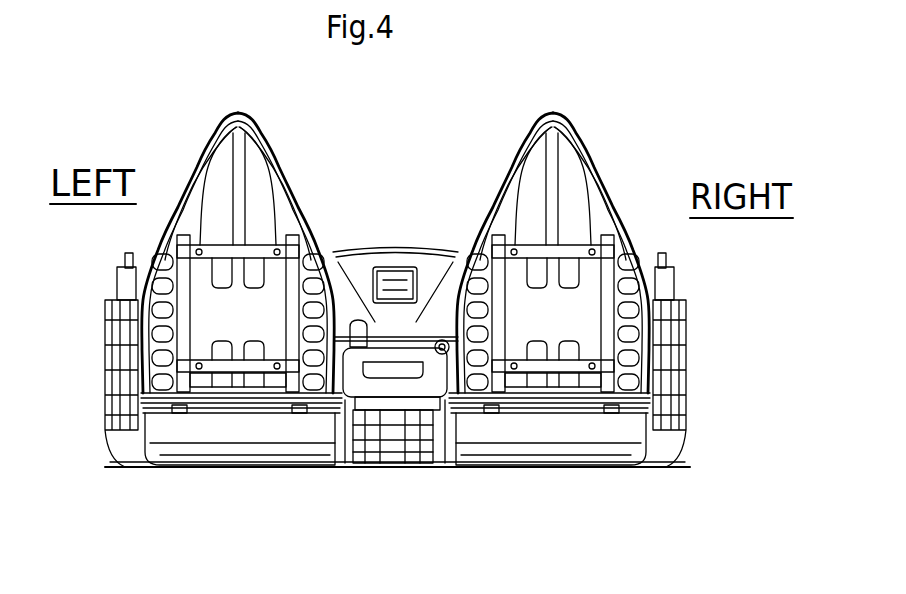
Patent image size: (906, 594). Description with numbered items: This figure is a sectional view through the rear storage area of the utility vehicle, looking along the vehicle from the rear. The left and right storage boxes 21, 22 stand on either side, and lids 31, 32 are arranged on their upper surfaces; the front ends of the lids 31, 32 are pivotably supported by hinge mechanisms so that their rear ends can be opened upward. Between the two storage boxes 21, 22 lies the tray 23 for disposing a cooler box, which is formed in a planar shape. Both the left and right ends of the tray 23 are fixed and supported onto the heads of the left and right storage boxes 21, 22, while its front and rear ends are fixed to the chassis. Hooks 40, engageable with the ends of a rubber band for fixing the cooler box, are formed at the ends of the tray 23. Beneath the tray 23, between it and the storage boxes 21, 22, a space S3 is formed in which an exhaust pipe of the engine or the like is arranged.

The left storage box 21 is at (185, 428).
The lid 31 is at (242, 393).
The right storage box 22 is at (510, 437).
The lid 32 is at (558, 393).
The hook 40 is at (340, 400).
The tray 23 is at (405, 400).
The space S3 is at (380, 457).